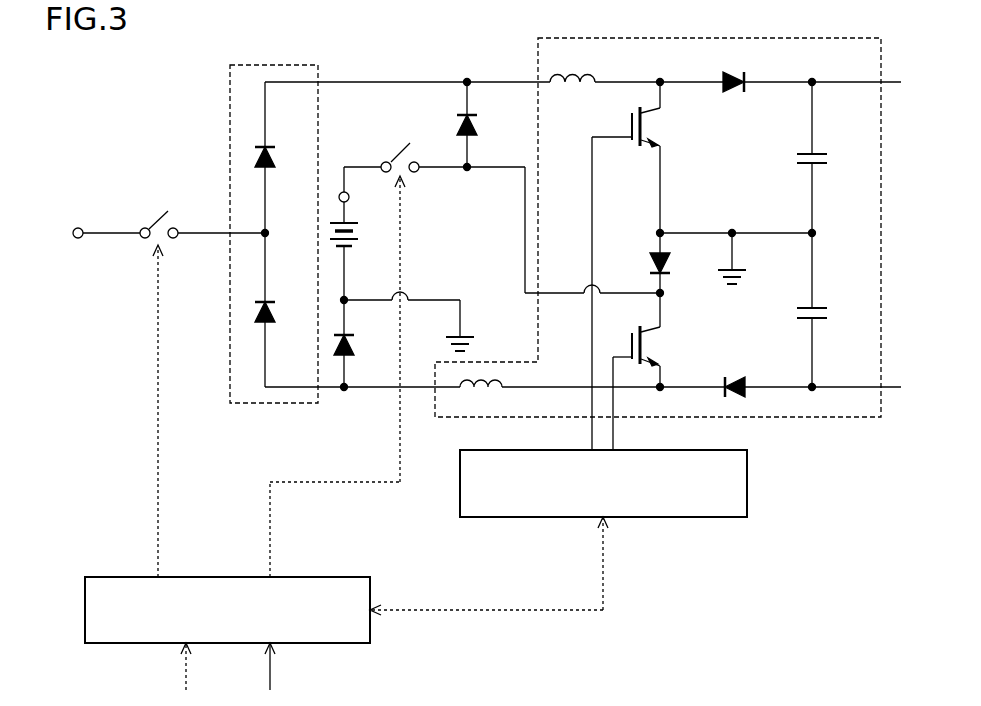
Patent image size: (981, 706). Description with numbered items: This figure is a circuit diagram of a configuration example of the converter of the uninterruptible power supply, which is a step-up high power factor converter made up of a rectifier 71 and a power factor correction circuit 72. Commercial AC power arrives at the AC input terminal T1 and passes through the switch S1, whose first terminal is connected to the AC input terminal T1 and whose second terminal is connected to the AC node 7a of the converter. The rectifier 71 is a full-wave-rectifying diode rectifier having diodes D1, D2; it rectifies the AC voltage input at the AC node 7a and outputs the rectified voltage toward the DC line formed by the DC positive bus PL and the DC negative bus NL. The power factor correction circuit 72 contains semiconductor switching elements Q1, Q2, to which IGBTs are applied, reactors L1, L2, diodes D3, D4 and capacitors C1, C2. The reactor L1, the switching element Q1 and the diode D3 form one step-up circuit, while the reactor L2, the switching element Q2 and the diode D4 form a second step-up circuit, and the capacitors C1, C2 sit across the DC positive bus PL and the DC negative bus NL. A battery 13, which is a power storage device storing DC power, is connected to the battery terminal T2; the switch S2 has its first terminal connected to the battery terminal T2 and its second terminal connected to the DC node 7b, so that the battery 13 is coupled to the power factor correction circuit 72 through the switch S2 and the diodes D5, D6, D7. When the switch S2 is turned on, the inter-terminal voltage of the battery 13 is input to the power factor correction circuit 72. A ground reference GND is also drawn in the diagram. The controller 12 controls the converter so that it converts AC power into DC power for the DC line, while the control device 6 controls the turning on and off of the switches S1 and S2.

The rectifier 71 is at (280, 65).
The power factor correction (PFC) circuit 72 is at (800, 38).
The controller 12 is at (695, 450).
The control device 6 is at (330, 577).
The AC node 7a is at (262, 238).
The DC node 7b is at (470, 170).
The battery 13 is at (327, 228).
The AC input terminal T1 is at (80, 227).
The battery terminal T2 is at (350, 200).
The switch S1 is at (178, 222).
The switch S2 is at (396, 150).
The diode D1 is at (283, 160).
The diode D2 is at (283, 314).
The diode D3 is at (737, 68).
The diode D4 is at (737, 374).
The diode D5 is at (485, 123).
The diode D6 is at (362, 343).
The diode D7 is at (678, 263).
The reactor L1 is at (572, 64).
The reactor L2 is at (481, 399).
The semiconductor switching element Q1 is at (628, 125).
The semiconductor switching element Q2 is at (631, 345).
The capacitor C1 is at (818, 150).
The capacitor C2 is at (818, 303).
The DC positive bus PL is at (818, 80).
The DC negative bus NL is at (818, 385).
The ground GND is at (438, 326).